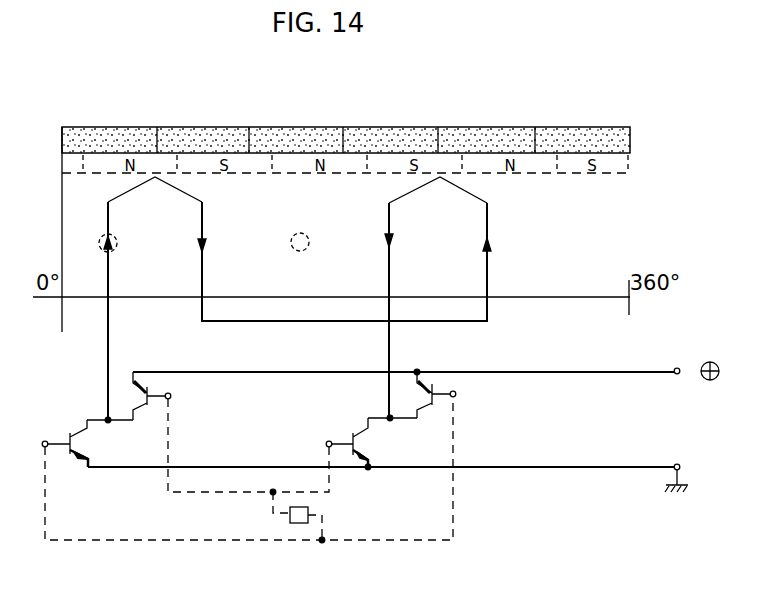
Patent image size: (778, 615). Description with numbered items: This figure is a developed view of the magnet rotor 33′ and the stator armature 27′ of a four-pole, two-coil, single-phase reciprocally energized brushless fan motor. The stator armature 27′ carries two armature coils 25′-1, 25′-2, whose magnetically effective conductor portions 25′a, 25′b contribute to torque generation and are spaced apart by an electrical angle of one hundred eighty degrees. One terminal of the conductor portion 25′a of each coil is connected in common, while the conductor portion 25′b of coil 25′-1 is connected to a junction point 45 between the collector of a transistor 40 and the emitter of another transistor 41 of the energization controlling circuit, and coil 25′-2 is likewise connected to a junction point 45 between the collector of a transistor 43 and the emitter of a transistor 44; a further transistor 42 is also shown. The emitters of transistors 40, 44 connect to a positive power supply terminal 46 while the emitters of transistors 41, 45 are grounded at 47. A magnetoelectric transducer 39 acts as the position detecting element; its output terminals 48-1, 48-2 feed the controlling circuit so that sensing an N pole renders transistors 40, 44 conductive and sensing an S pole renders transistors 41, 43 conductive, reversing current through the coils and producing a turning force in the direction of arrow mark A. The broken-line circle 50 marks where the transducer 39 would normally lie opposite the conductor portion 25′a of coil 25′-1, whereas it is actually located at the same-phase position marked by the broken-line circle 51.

The magnet rotor 33′ is at (582, 127).
The stator armature 27′ is at (344, 298).
The armature coil 25′-1 is at (204, 210).
The armature coil 25′-2 is at (389, 218).
The magnetically effective conductor portion 25′a is at (110, 270).
The magnetically effective conductor portion 25′b is at (204, 270).
The broken line circle 50 is at (117, 240).
The broken line circle 51 is at (308, 236).
The arrow mark A is at (650, 137).
The transistor 40 is at (175, 388).
The transistor 41 is at (76, 462).
The transistor 42 is at (104, 416).
The transistor 43 is at (458, 388).
The transistor 44 is at (375, 460).
The junction point 45 is at (388, 416).
The positive power supply terminal 46 is at (678, 366).
The ground 47 is at (678, 463).
The magnetoelectric transducer 39 is at (301, 525).
The output terminal 48-1 is at (268, 500).
The output terminal 48-2 is at (325, 520).